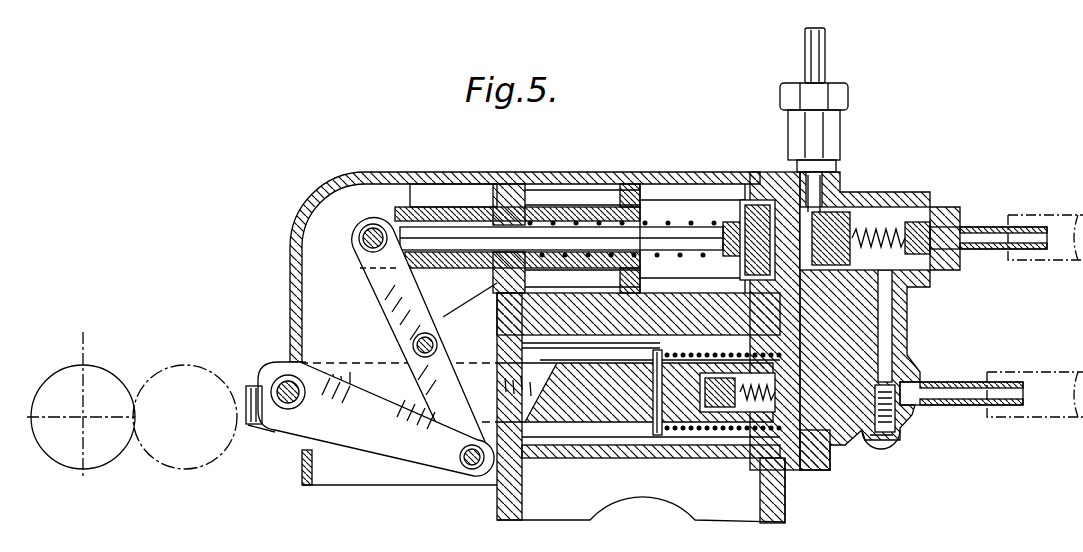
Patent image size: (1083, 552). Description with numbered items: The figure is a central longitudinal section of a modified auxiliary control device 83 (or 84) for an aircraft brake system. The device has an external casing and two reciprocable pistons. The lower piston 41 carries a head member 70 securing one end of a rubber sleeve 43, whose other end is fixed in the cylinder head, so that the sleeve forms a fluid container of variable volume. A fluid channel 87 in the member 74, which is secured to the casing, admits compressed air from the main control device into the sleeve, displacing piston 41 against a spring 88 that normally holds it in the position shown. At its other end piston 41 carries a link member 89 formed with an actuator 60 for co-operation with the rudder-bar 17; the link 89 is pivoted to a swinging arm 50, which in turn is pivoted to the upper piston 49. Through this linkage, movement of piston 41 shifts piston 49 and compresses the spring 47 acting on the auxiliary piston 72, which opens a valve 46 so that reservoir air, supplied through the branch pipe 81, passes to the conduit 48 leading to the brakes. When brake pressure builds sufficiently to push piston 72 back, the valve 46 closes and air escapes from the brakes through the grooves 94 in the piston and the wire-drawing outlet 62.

The rudder-bar 17 is at (105, 372).
The lower reciprocable device or piston 41 is at (342, 376).
The rubber sleeve 43 is at (742, 435).
The valve 46 is at (836, 190).
The spring 47 is at (575, 218).
The conduit 48 is at (826, 60).
The piston 49 is at (437, 212).
The swinging arm 50 is at (372, 285).
The member or actuator 60 is at (250, 430).
The wire-drawing outlet 62 is at (768, 180).
The head member 70 is at (838, 428).
The auxiliary piston 72 is at (697, 236).
The member 74 is at (896, 318).
The branch pipe 81 is at (978, 226).
The auxiliary control device 83 is at (357, 192).
The auxiliary control device 84 is at (960, 384).
The fluid channel 87 is at (896, 394).
The spring 88 is at (686, 438).
The link member 89 is at (383, 446).
The grooves 94 is at (748, 198).